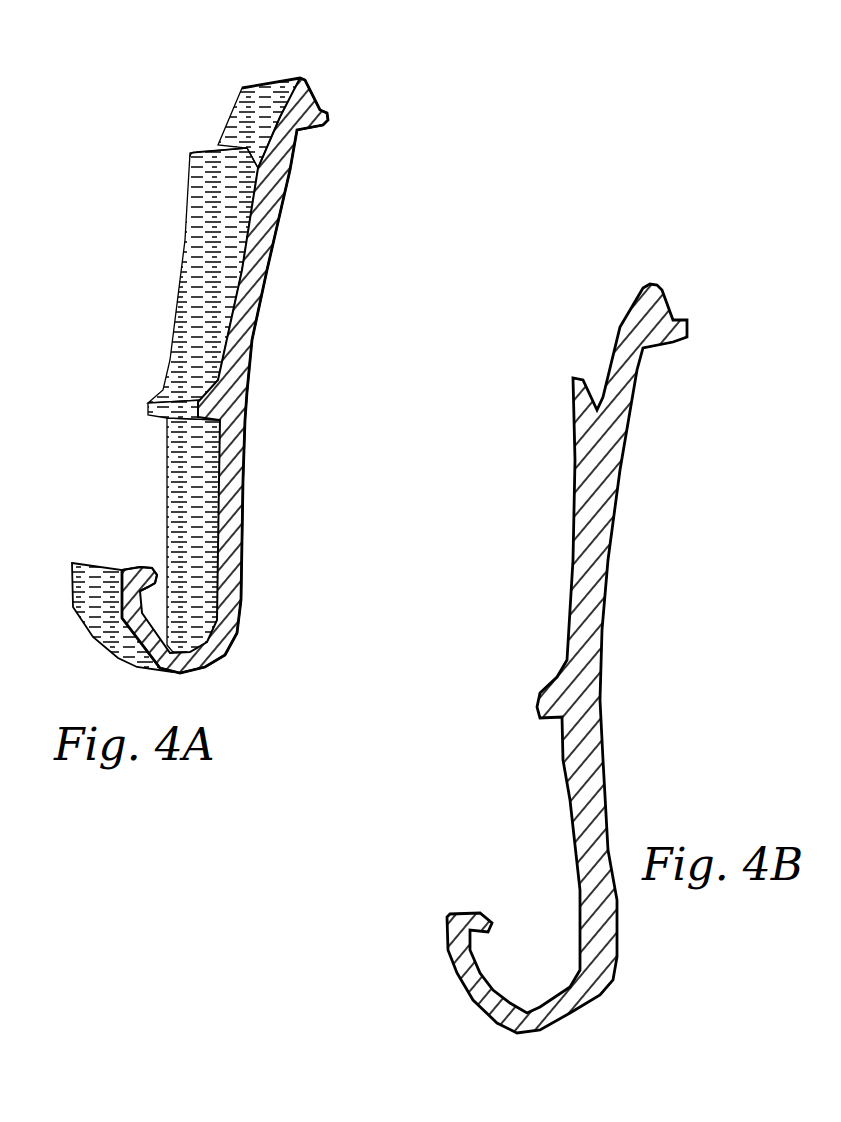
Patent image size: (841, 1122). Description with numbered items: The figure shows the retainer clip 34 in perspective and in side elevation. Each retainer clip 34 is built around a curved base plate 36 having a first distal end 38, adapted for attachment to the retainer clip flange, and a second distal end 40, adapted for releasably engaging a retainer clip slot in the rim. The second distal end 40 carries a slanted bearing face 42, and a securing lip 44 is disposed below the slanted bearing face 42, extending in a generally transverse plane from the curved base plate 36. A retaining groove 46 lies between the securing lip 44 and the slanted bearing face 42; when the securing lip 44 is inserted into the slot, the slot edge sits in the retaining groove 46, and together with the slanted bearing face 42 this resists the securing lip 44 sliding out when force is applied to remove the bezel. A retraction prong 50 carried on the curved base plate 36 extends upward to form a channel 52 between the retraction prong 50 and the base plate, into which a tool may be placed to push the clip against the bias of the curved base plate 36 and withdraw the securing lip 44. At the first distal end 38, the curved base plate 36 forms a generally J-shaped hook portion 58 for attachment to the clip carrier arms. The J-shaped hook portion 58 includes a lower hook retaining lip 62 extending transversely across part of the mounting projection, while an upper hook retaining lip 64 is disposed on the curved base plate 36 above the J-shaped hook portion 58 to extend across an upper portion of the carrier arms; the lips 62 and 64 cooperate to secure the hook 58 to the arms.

In FIG. 4A, the retainer clip 34 is at (217, 362).
In FIG. 4B, the retainer clip 34 is at (574, 619).
In FIG. 4A, the curved base plate 36 is at (253, 253).
In FIG. 4B, the curved base plate 36 is at (606, 567).
In FIG. 4A, the first distal end 38 is at (235, 657).
In FIG. 4B, the first distal end 38 is at (618, 998).
In FIG. 4A, the second distal end 40 is at (255, 72).
In FIG. 4B, the second distal end 40 is at (619, 305).
In FIG. 4A, the slanted bearing face 42 is at (306, 80).
In FIG. 4B, the slanted bearing face 42 is at (655, 286).
In FIG. 4A, the securing lip 44 is at (330, 118).
In FIG. 4B, the securing lip 44 is at (692, 333).
In FIG. 4A, the retaining groove 46 is at (322, 108).
In FIG. 4B, the retaining groove 46 is at (681, 318).
In FIG. 4A, the retraction prong 50 is at (200, 147).
In FIG. 4B, the retraction prong 50 is at (572, 400).
In FIG. 4A, the channel 52 is at (285, 120).
In FIG. 4B, the channel 52 is at (595, 383).
In FIG. 4A, the J-shaped hook portion 58 is at (82, 632).
In FIG. 4B, the J-shaped hook portion 58 is at (470, 990).
In FIG. 4A, the lower hook retaining lip 62 is at (137, 566).
In FIG. 4B, the lower hook retaining lip 62 is at (455, 912).
In FIG. 4A, the upper hook retaining lip 64 is at (148, 397).
In FIG. 4B, the upper hook retaining lip 64 is at (537, 705).